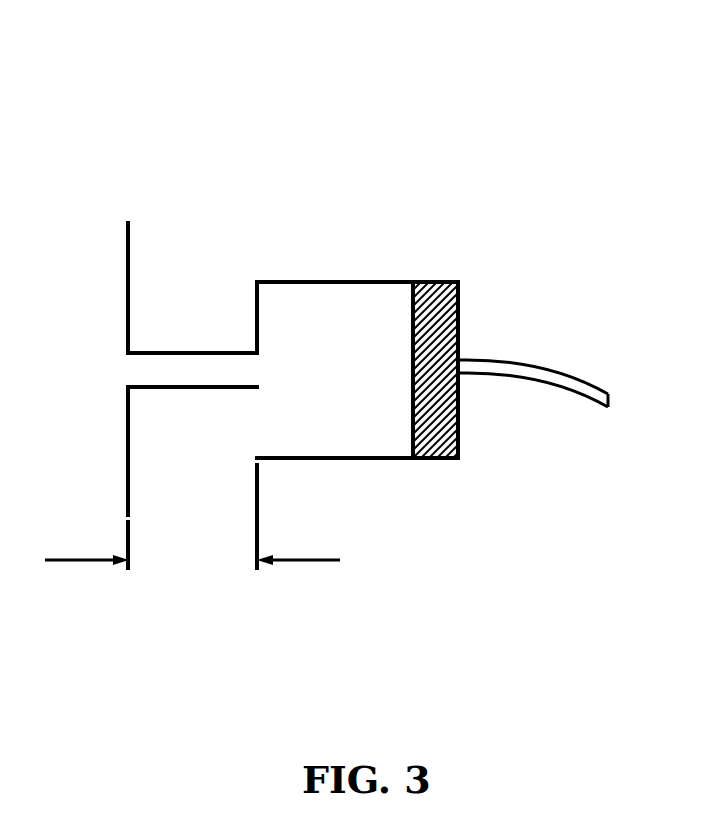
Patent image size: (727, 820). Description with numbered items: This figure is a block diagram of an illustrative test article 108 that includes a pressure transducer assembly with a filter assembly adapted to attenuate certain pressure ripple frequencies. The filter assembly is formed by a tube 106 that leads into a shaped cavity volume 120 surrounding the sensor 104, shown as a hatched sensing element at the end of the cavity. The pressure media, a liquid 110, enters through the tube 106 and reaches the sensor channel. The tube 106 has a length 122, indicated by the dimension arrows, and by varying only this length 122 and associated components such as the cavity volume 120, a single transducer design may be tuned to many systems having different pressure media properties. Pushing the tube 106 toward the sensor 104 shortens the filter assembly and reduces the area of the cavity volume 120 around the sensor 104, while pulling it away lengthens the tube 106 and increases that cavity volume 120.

The sensor 104 is at (472, 273).
The tube 106 is at (161, 338).
The test article 108 is at (411, 108).
The liquid 110 is at (73, 373).
The cavity volume 120 is at (369, 476).
The length 122 is at (199, 568).